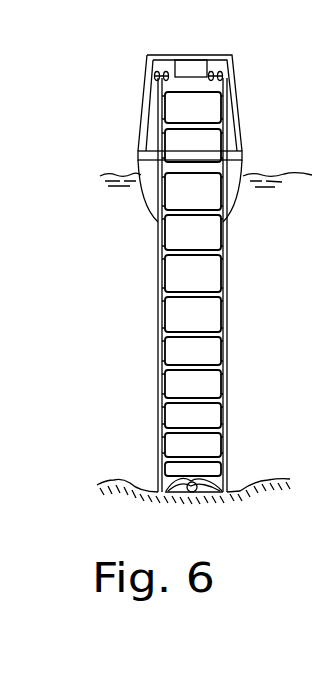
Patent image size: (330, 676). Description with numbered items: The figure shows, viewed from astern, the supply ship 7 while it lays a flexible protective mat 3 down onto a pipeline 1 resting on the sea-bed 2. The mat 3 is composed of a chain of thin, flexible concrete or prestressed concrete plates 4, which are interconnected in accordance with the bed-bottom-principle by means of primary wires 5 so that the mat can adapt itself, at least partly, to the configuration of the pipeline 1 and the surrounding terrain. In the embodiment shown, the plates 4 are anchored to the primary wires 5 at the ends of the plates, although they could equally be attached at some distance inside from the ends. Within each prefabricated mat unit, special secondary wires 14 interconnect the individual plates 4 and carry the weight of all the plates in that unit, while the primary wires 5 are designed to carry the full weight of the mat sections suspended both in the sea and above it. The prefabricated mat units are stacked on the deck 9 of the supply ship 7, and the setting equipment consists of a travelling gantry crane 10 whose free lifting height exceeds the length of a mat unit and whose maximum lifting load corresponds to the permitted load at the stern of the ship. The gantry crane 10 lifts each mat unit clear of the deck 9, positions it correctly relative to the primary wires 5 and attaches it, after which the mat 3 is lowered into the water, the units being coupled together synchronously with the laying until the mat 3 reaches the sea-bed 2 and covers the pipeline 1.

The pipeline 1 is at (203, 484).
The sea-bed 2 is at (115, 483).
The mat 3 is at (184, 285).
The plate 4 is at (180, 347).
The primary wire 5 is at (157, 258).
The supply ship 7 is at (232, 203).
The deck 9 is at (236, 150).
The travelling gantry crane 10 is at (235, 78).
The secondary wire 14 is at (160, 308).